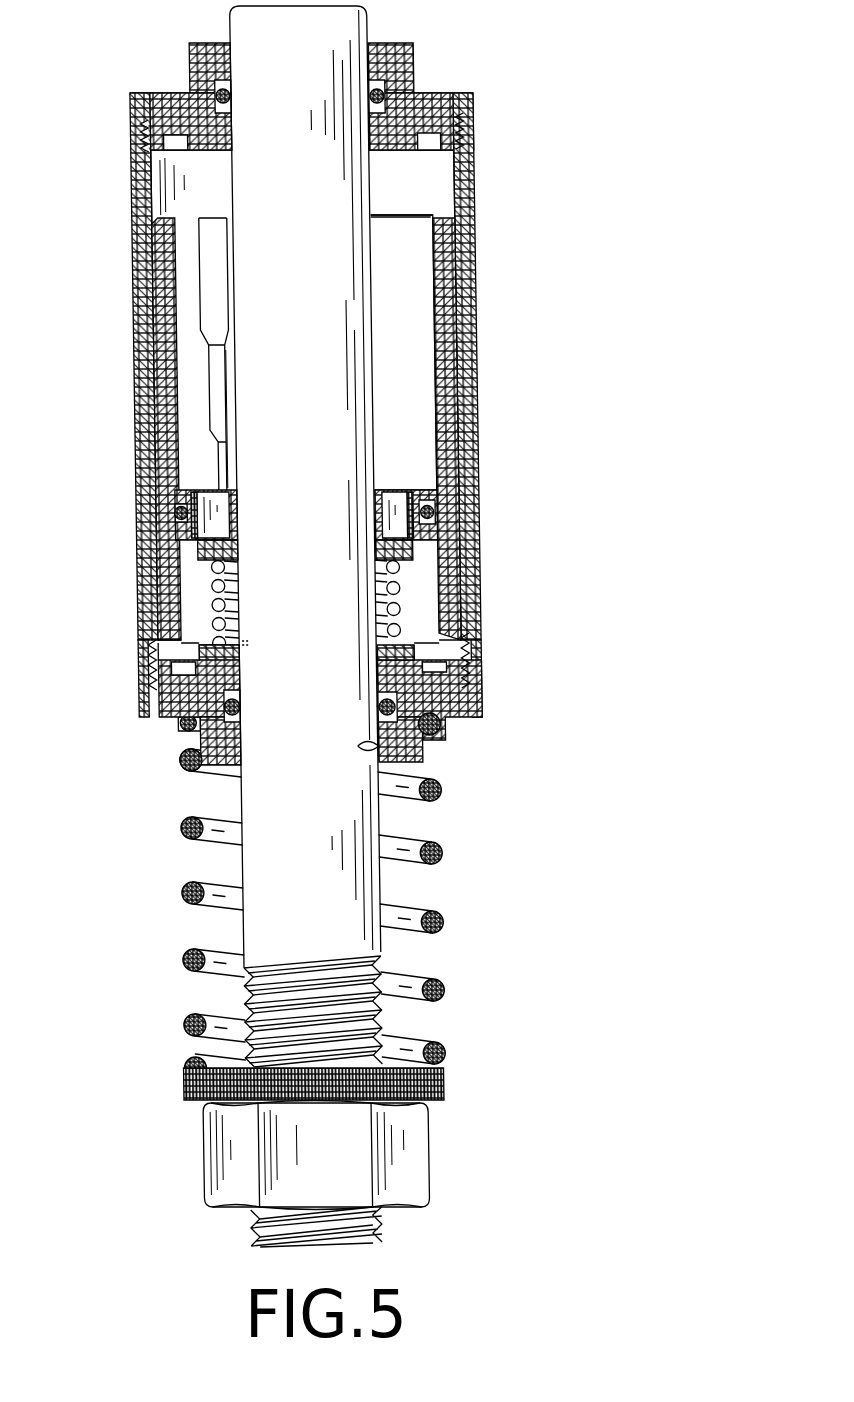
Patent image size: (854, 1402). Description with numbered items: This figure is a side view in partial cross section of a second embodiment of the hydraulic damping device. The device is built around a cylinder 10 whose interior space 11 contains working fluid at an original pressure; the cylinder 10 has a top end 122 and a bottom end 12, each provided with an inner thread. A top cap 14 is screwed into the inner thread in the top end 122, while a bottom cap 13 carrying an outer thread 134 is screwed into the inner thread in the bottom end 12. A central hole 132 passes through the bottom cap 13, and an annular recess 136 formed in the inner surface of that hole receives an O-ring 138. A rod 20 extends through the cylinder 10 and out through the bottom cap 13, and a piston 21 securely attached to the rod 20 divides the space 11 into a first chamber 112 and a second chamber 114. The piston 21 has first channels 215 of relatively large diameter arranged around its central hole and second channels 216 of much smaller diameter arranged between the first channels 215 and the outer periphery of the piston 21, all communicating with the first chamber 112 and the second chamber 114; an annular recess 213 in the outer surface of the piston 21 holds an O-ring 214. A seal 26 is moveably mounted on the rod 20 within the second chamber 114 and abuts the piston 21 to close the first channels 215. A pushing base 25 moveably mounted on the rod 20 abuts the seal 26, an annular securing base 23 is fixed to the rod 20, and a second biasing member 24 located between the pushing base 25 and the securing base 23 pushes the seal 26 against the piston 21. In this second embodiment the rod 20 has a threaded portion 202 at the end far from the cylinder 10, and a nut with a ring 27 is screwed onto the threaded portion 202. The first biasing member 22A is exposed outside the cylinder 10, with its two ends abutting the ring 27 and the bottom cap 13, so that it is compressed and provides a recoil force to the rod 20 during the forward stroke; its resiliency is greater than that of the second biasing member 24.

The cylinder 10 is at (493, 483).
The space 11 is at (190, 347).
The first chamber 112 is at (415, 355).
The second chamber 114 is at (420, 583).
The bottom end 12 is at (146, 643).
The top end 122 is at (149, 140).
The bottom cap 13 is at (492, 695).
The central hole 132 is at (421, 755).
The outer thread 134 is at (150, 677).
The annular recess 136 is at (221, 750).
The O-ring 138 is at (192, 728).
The top cap 14 is at (433, 57).
The rod 20 is at (389, 887).
The threaded portion 202 is at (359, 1020).
The piston 21 is at (172, 490).
The annular recess 213 is at (202, 555).
The O-ring 214 is at (186, 515).
The first channels 215 is at (395, 498).
The second channels 216 is at (421, 490).
The first biasing member 22A is at (428, 853).
The securing base 23 is at (414, 648).
The second biasing member 24 is at (411, 604).
The pushing base 25 is at (202, 547).
The seal 26 is at (419, 538).
The ring 27 is at (437, 1082).